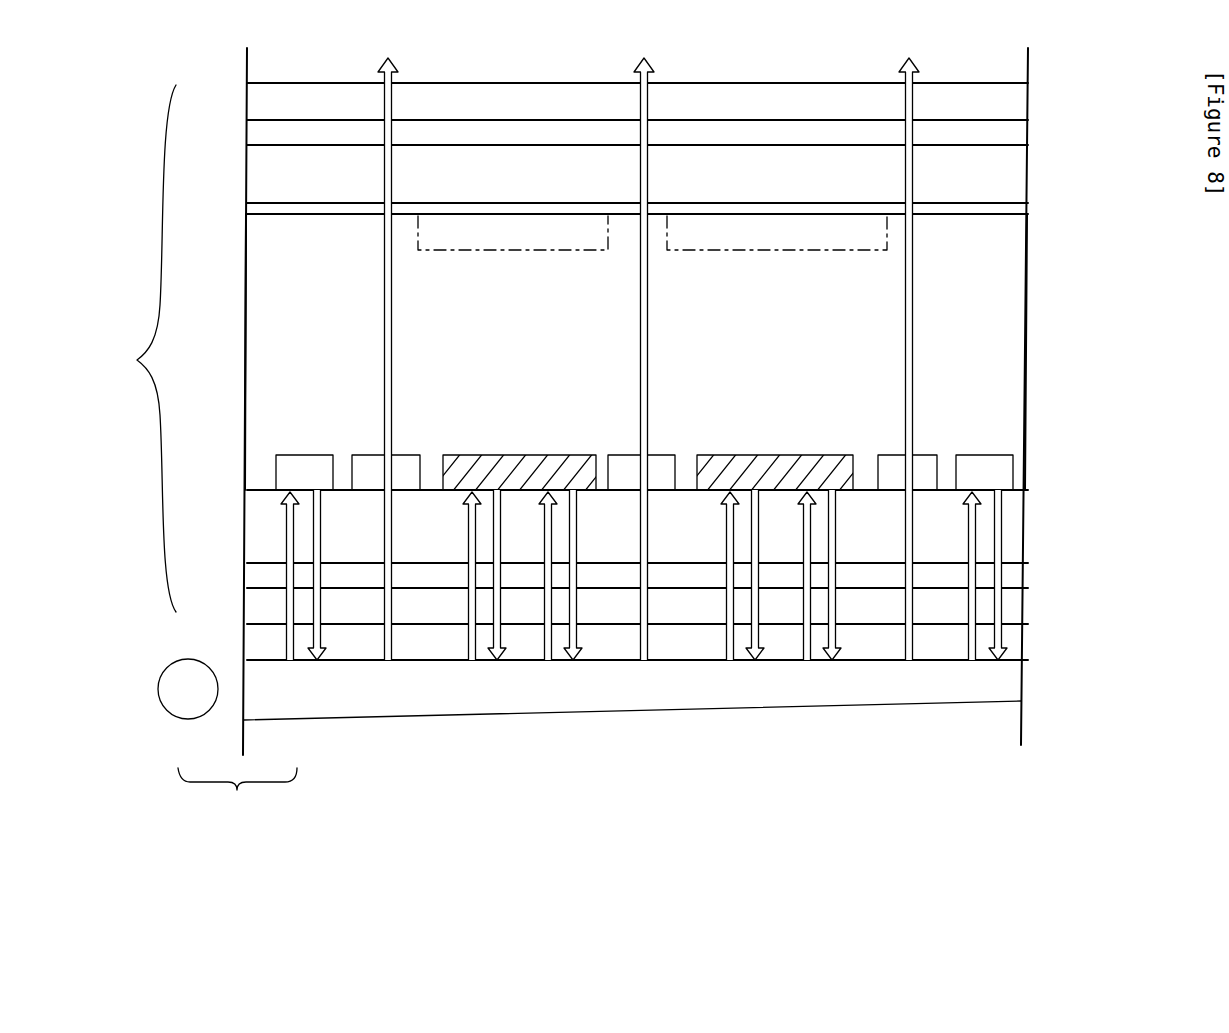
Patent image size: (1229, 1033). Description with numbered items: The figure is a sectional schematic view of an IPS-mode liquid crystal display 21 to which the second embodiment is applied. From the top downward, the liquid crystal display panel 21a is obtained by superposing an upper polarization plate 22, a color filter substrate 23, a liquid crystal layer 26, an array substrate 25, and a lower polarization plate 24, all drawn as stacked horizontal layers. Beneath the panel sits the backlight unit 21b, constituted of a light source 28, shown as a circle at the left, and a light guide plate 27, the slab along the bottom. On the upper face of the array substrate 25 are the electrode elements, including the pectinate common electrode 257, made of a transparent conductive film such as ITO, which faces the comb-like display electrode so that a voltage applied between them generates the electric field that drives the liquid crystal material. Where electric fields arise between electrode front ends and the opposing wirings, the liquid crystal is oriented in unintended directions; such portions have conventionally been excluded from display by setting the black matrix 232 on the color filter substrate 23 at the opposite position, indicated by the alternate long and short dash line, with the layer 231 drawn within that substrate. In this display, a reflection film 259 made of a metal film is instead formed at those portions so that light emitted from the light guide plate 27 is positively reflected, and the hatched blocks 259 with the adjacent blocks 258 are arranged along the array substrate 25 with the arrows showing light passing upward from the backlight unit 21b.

The IPS-mode liquid crystal display 21 is at (650, 722).
The liquid crystal display panel 21a is at (135, 348).
The backlight unit 21b is at (237, 794).
The upper polarization plate 22 is at (247, 105).
The color filter substrate 23 is at (236, 145).
The black matrix 231 is at (352, 209).
The black matrix 232 is at (497, 251).
The lower polarization plate 24 is at (247, 612).
The array substrate 25 is at (236, 563).
The liquid crystal layer 26 is at (247, 339).
The light guide plate 27 is at (277, 701).
The light source 28 is at (189, 712).
The common electrode 257 is at (368, 455).
The reflective electrode 258 is at (294, 455).
The reflection film 259 is at (506, 455).